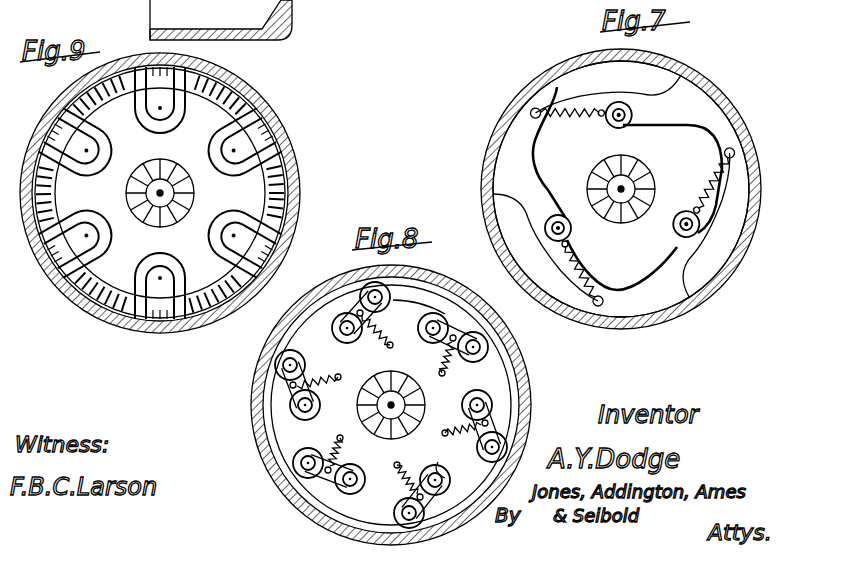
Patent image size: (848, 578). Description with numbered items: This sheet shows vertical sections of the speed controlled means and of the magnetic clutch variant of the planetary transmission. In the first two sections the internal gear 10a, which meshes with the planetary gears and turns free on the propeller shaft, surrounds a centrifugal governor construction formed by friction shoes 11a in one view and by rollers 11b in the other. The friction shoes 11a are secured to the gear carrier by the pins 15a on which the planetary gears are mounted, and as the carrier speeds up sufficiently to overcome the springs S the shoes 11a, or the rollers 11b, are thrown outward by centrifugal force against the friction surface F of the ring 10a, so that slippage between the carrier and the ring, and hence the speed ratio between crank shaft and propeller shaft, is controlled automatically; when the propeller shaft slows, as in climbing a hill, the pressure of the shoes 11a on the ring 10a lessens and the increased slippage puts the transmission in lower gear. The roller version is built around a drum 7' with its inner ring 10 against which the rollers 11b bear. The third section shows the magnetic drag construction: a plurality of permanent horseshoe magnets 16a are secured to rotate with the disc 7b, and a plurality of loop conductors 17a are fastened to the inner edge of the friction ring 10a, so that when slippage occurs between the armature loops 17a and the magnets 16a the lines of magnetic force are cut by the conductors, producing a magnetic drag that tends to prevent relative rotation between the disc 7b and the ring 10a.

In FIG. 9, the internal gear 10a is at (284, 123).
In FIG. 7, the internal gear 10a is at (571, 64).
In FIG. 9, the disc 7b is at (298, 200).
In FIG. 7, the disc 7b is at (708, 240).
In FIG. 9, the permanent horseshoe magnets 16a is at (214, 240).
In FIG. 9, the loop conductors 17a is at (108, 321).
In FIG. 7, the friction shoes 11a is at (740, 96).
In FIG. 7, the pins 15a is at (624, 100).
In FIG. 7, the springs S is at (641, 191).
In FIG. 8, the springs S is at (389, 405).
In FIG. 8, the drum 7' is at (408, 405).
In FIG. 8, the inner drum ring 10 is at (530, 388).
In FIG. 8, the rollers 11b is at (528, 420).
In FIG. 8, the friction face F is at (431, 461).